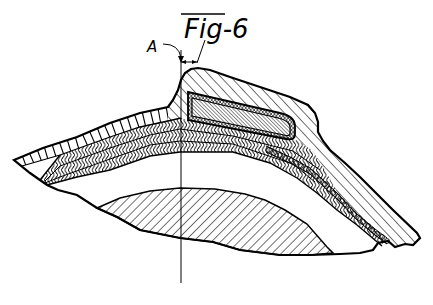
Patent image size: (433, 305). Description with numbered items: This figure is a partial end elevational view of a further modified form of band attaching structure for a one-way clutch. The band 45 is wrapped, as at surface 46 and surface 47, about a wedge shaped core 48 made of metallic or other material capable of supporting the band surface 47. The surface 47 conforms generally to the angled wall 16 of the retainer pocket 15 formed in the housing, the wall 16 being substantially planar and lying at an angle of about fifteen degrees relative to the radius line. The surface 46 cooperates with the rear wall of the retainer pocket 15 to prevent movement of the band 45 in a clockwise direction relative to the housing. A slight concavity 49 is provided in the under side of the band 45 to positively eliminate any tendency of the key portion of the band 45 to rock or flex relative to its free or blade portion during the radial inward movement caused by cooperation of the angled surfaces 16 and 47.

The retainer pocket 15 is at (243, 90).
The wall of the pocket 16 is at (188, 98).
The band 45 is at (90, 146).
The band surface 46 is at (300, 127).
The band surface 47 is at (187, 106).
The wedge shaped core 48 is at (257, 115).
The concavity 49 is at (230, 151).